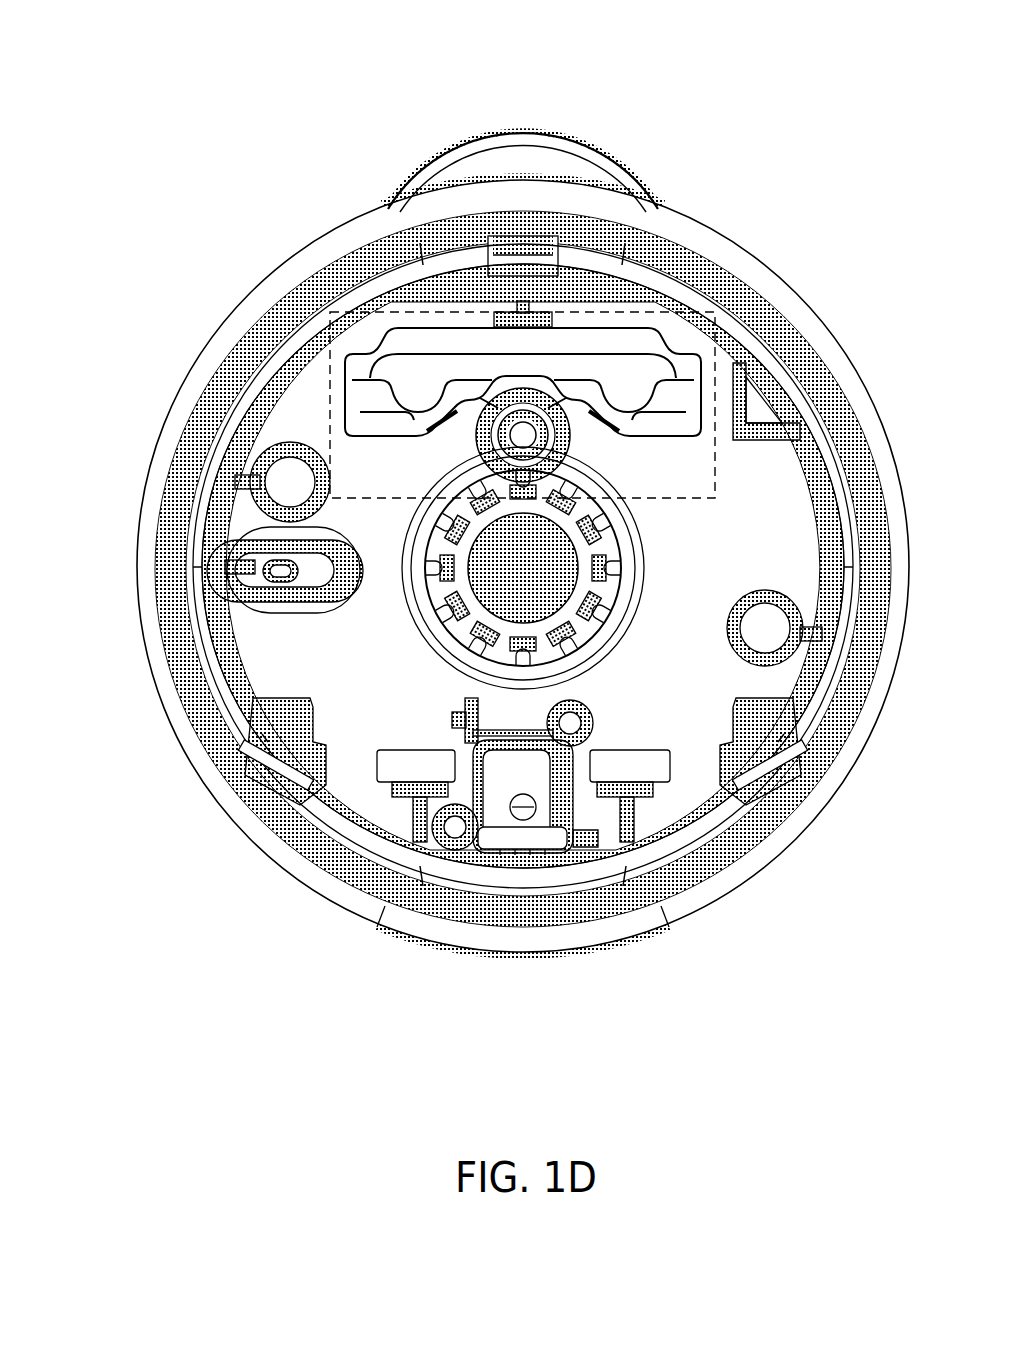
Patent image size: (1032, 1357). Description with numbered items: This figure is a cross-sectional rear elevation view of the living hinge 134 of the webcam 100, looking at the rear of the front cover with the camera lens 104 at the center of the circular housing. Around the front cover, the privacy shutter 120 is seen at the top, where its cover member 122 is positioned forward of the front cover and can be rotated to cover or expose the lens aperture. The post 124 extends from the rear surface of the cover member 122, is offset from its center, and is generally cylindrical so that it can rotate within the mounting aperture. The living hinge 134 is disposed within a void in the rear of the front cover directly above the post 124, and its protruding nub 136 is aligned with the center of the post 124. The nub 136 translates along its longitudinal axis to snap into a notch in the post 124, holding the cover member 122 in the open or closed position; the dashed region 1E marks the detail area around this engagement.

The webcam 100 is at (190, 196).
The privacy shutter 120 is at (519, 130).
The cover member 122 is at (548, 176).
The living hinge 134 is at (418, 340).
The detail region 1E is at (705, 311).
The protruding nub 136 is at (510, 402).
The post 124 is at (538, 440).
The camera lens 104 is at (525, 585).